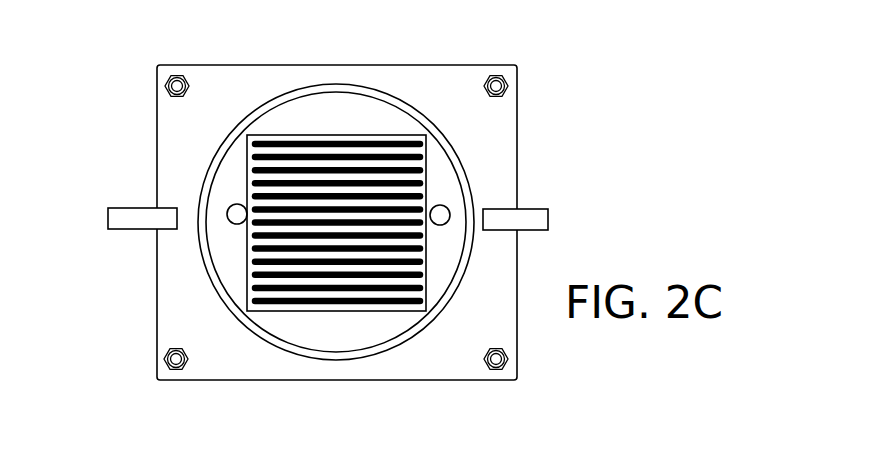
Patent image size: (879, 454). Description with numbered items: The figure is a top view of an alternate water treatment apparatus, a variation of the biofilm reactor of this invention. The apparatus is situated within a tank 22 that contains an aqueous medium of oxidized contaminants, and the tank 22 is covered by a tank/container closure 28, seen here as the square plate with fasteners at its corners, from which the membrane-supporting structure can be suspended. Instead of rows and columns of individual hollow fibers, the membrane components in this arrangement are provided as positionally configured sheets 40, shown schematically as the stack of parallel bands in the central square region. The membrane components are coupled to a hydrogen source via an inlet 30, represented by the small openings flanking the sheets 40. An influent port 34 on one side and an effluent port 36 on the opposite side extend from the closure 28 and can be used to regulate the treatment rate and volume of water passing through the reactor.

The tank 22 is at (220, 298).
The tank/container closure 28 is at (240, 78).
The inlet 30 is at (440, 215).
The influent port 34 is at (125, 218).
The effluent port 36 is at (537, 220).
The positionally configured sheets 40 is at (423, 152).